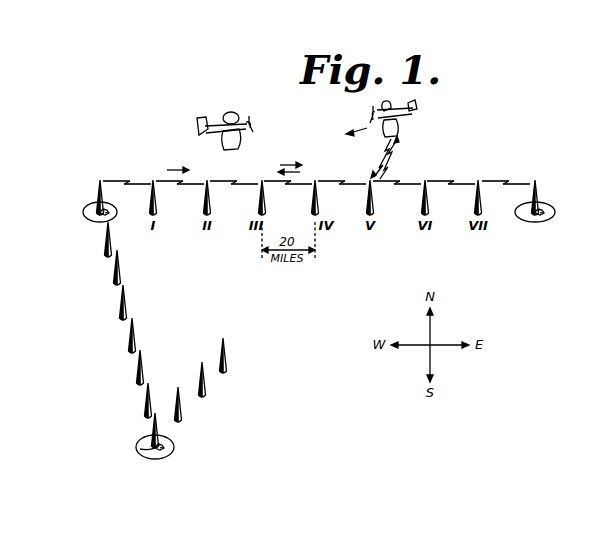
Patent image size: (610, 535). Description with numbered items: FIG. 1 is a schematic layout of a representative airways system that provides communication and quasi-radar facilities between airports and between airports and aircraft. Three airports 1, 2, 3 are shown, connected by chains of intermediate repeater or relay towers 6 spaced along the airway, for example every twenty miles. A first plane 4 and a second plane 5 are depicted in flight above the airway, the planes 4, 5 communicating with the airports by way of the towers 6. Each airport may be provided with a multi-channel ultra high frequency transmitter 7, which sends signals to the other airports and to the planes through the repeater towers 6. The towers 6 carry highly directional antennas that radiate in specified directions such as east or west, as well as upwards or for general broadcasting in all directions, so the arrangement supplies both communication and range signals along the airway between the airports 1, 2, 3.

The airport 1 is at (92, 216).
The airport 2 is at (543, 219).
The airport 3 is at (163, 452).
The plane 4 is at (219, 120).
The plane 5 is at (406, 122).
The repeater or relay tower 6 is at (485, 180).
The multi-channel ultra high frequency transmitter 7 is at (142, 448).